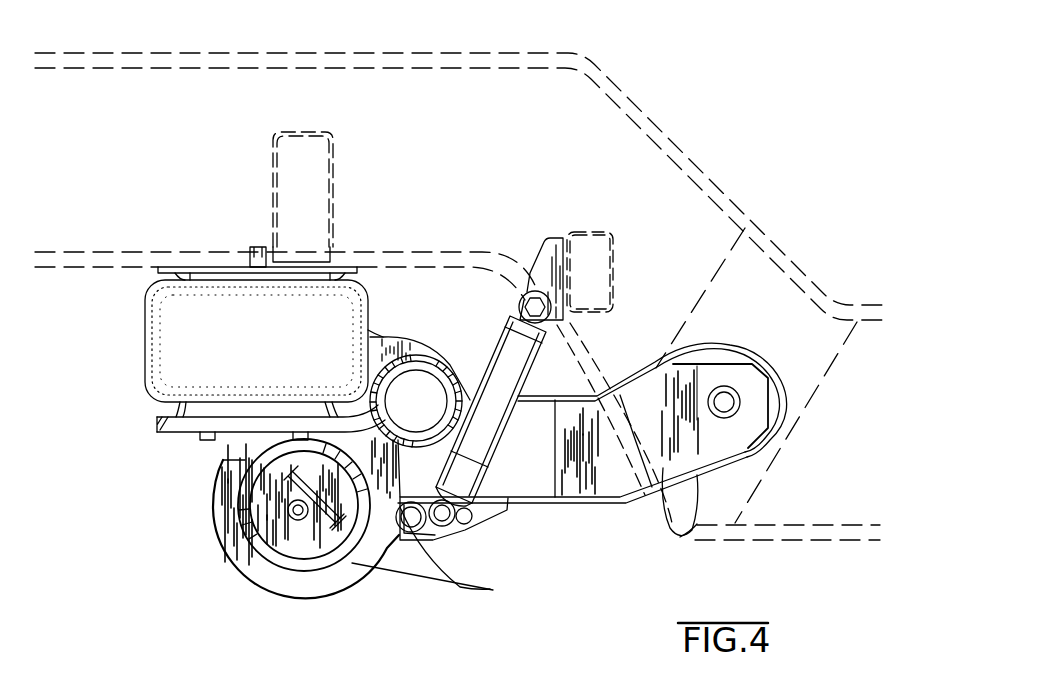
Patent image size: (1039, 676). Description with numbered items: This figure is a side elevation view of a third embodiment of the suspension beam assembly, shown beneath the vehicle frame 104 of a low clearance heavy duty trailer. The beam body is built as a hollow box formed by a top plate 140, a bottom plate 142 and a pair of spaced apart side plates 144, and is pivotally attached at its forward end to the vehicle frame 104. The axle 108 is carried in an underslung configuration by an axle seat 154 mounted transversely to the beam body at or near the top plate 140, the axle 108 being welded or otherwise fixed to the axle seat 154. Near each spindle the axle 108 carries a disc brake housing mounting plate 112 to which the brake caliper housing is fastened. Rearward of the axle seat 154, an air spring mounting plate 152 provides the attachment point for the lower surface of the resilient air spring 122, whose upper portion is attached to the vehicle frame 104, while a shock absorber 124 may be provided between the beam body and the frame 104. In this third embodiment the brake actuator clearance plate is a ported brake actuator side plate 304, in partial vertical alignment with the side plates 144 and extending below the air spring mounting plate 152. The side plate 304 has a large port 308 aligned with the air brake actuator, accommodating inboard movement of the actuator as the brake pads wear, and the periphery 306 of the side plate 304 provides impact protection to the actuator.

The vehicle frame 104 is at (459, 273).
The axle 108 is at (416, 377).
The disc brake housing mounting plate 112 is at (536, 277).
The air spring 122 is at (212, 367).
The shock absorber 124 is at (452, 540).
The top plate 140 is at (663, 514).
The bottom plate 142 is at (652, 474).
The side plates 144 is at (572, 516).
The air spring mounting plate 152 is at (239, 447).
The axle seat 154 is at (488, 397).
The ported brake actuator side plate 304 is at (442, 556).
The periphery 306 is at (257, 521).
The port 308 is at (219, 505).